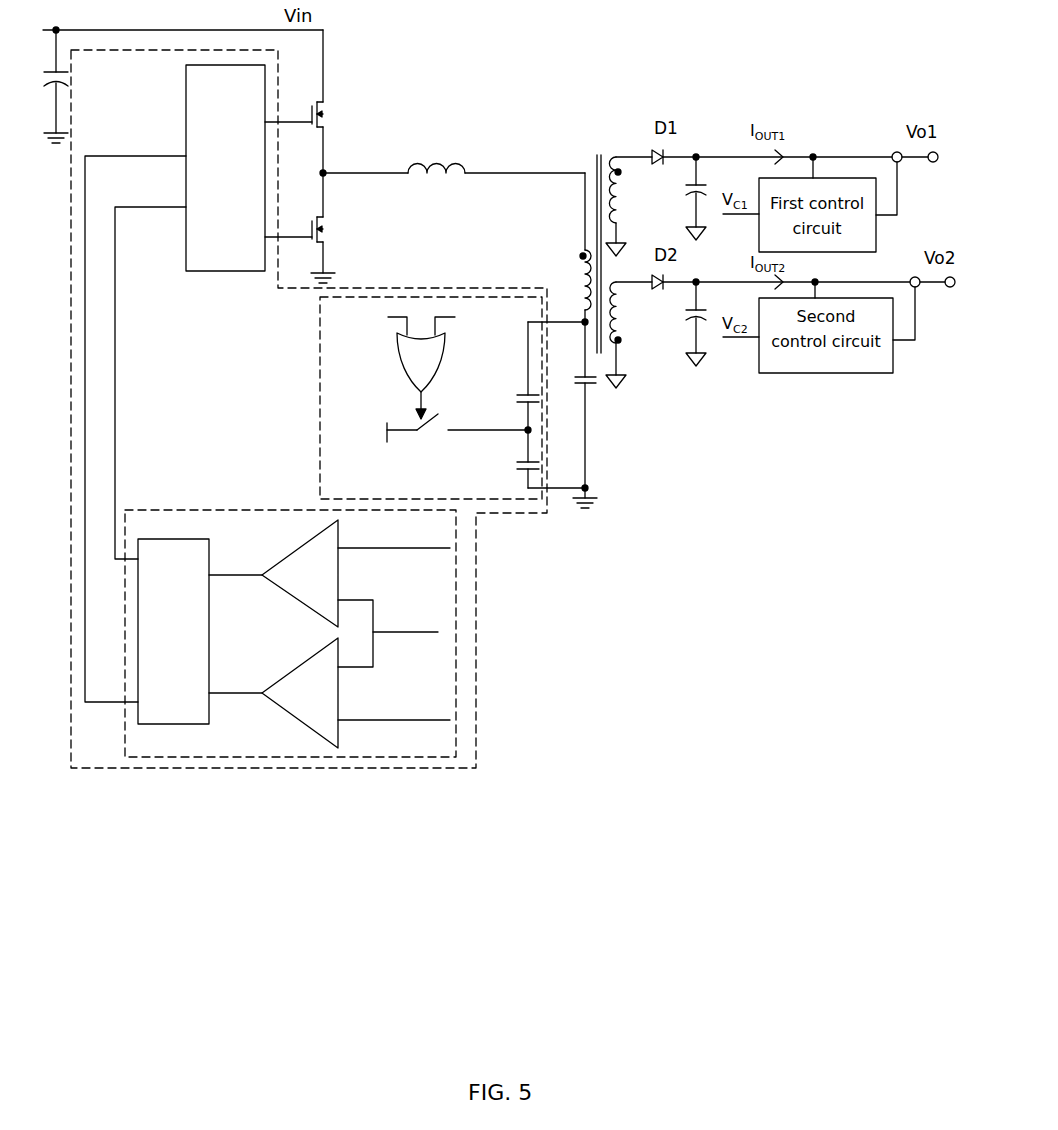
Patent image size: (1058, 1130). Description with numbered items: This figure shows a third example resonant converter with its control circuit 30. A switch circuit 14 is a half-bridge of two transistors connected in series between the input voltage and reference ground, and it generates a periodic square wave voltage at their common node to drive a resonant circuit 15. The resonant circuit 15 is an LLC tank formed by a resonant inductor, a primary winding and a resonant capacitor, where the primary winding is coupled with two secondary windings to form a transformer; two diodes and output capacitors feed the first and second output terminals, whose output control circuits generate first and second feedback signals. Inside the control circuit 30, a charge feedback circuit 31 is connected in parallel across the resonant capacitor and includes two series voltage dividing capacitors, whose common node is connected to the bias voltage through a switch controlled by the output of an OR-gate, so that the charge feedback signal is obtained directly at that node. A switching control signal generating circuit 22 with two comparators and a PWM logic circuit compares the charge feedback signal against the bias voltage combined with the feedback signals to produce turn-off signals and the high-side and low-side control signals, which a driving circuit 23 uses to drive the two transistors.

The switch circuit 14 is at (341, 91).
The resonant circuit 15 is at (521, 146).
The switching control signal generating circuit 22 is at (265, 508).
The driving circuit 23 is at (238, 199).
The control circuit 30 is at (476, 622).
The charge feedback circuit 31 is at (320, 345).